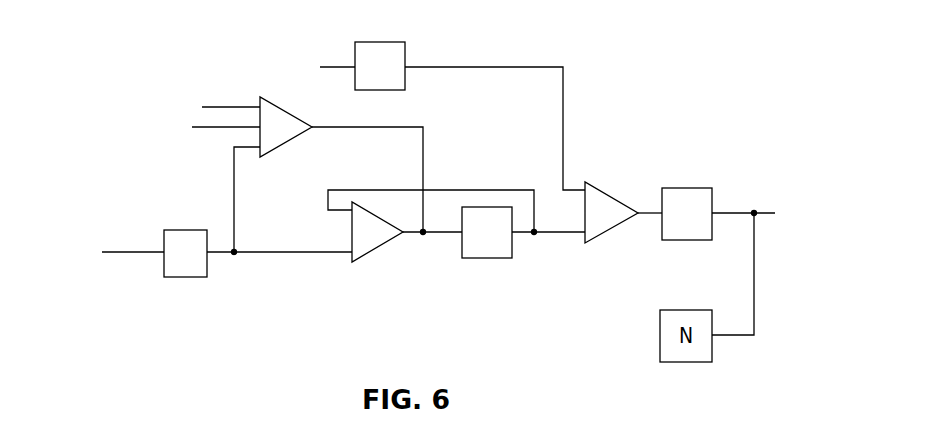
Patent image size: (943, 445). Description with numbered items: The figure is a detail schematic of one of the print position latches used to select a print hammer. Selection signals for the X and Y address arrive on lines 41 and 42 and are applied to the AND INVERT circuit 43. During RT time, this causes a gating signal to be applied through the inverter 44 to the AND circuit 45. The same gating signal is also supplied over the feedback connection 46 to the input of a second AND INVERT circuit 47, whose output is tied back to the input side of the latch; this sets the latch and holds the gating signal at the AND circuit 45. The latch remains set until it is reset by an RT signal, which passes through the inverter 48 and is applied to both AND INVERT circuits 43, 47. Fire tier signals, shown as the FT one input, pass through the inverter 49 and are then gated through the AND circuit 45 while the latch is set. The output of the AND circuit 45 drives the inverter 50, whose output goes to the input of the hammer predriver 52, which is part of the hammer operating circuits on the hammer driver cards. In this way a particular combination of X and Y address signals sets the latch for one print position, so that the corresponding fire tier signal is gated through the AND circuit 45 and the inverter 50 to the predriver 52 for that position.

The X address selection line 41 is at (237, 103).
The Y address selection line 42 is at (225, 128).
The AND INVERT circuit 43 is at (287, 113).
The inverter 44 is at (502, 260).
The AND circuit 45 is at (597, 237).
The feedback connection 46 is at (445, 192).
The AND INVERT circuit 47 is at (368, 253).
The inverter 48 is at (180, 230).
The inverter 49 is at (377, 42).
The inverter 50 is at (698, 240).
The hammer predriver 52 is at (809, 226).